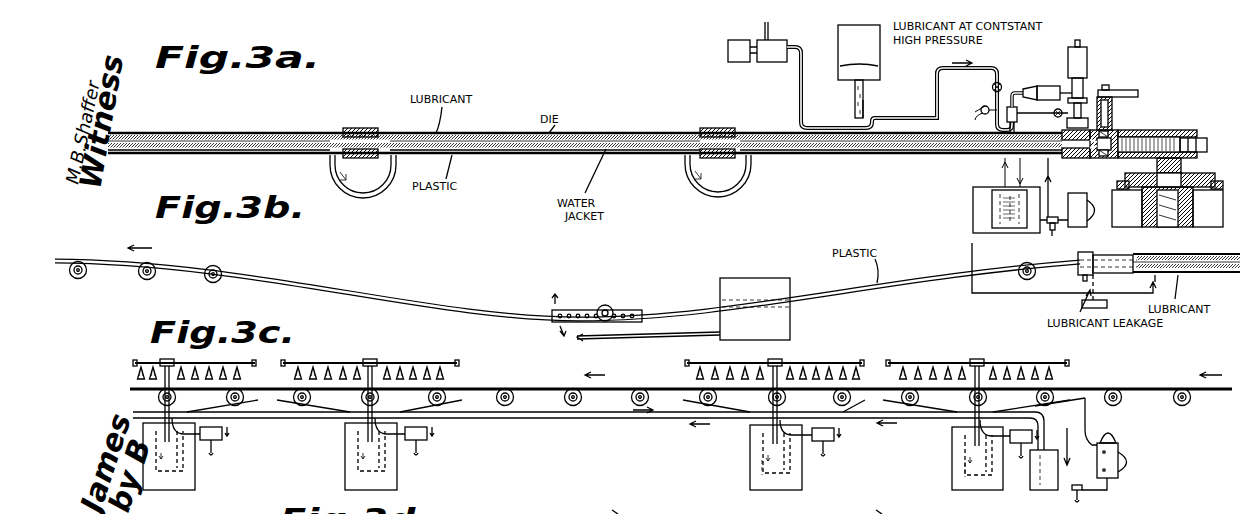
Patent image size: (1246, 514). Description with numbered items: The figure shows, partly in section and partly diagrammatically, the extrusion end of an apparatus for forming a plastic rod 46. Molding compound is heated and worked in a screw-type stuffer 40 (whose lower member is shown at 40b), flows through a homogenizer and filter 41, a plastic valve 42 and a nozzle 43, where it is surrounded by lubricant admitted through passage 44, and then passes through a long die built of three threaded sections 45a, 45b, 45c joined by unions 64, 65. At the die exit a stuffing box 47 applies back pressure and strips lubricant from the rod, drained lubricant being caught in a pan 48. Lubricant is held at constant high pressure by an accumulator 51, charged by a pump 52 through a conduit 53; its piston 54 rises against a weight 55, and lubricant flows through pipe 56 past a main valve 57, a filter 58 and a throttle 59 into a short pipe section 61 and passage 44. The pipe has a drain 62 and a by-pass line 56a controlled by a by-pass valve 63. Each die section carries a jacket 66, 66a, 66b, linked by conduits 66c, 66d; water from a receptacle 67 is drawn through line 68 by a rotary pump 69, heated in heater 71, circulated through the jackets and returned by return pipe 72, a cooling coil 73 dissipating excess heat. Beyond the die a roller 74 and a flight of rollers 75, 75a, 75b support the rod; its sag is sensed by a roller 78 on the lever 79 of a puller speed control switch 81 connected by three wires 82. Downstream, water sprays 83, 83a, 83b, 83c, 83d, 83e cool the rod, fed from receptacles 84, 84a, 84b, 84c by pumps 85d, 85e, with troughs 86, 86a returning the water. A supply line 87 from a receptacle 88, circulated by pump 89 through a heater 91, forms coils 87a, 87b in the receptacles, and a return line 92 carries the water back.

In FIG. 3A, the stuffer 40 is at (1120, 207).
In FIG. 3A, the die holder lower member 40b is at (1170, 221).
In FIG. 3A, the homogenizer and filter 41 is at (1148, 138).
In FIG. 3A, the plastic valve 42 is at (1107, 132).
In FIG. 3A, the nozzle 43 is at (1078, 158).
In FIG. 3A, the passage 44 is at (1112, 127).
In FIG. 3A, the die section 45a is at (790, 156).
In FIG. 3A, the die section 45b is at (522, 156).
In FIG. 3A, the die section 45c is at (145, 155).
In FIG. 3B, the die section 45c is at (1193, 275).
In FIG. 3A, the rod 46 is at (607, 133).
In FIG. 3B, the rod 46 is at (392, 290).
In FIG. 3C, the rod 46 is at (488, 387).
In FIG. 3B, the stuffing box 47 is at (1078, 273).
In FIG. 3B, the pan 48 is at (1108, 304).
In FIG. 3A, the accumulator 51 is at (865, 104).
In FIG. 3A, the pump 52 is at (728, 56).
In FIG. 3A, the conduit 53 is at (797, 78).
In FIG. 3A, the piston 54 is at (855, 100).
In FIG. 3A, the weight 55 is at (852, 41).
In FIG. 3A, the pipe 56 is at (918, 108).
In FIG. 3A, the by-pass line 56a is at (993, 155).
In FIG. 3A, the main valve 57 is at (992, 87).
In FIG. 3A, the filter 58 is at (1047, 88).
In FIG. 3A, the throttle 59 is at (1077, 78).
In FIG. 3A, the short pipe section 61 is at (1082, 112).
In FIG. 3A, the drain 62 is at (980, 108).
In FIG. 3A, the by-pass valve 63 is at (1018, 152).
In FIG. 3A, the union 64 is at (713, 128).
In FIG. 3A, the union 65 is at (362, 128).
In FIG. 3A, the jacket 66 is at (870, 156).
In FIG. 3A, the jacket 66a is at (636, 156).
In FIG. 3A, the jacket 66b is at (246, 156).
In FIG. 3A, the conduit 66c is at (701, 197).
In FIG. 3A, the conduit 66d is at (350, 199).
In FIG. 3A, the receptacle 67 is at (992, 198).
In FIG. 3A, the line 68 is at (1049, 224).
In FIG. 3A, the rotary pump 69 is at (1056, 228).
In FIG. 3A, the heater 71 is at (1067, 192).
In FIG. 3A, the return pipe 72 is at (975, 203).
In FIG. 3B, the return pipe 72 is at (988, 294).
In FIG. 3A, the water cooling coil 73 is at (990, 215).
In FIG. 3B, the roller 74 is at (1025, 281).
In FIG. 3B, the roller 75 is at (225, 282).
In FIG. 3C, the roller 75 is at (573, 405).
In FIG. 3B, the roller 75a is at (152, 280).
In FIG. 3B, the roller 75b is at (88, 278).
In FIG. 3B, the roller 78 is at (608, 306).
In FIG. 3B, the lever 79 is at (667, 310).
In FIG. 3B, the puller speed control switch 81 is at (768, 280).
In FIG. 3B, the wires 82 is at (698, 336).
In FIG. 3C, the water spray 83 is at (943, 361).
In FIG. 3C, the water spray 83a is at (806, 361).
In FIG. 3C, the water spray 83b is at (360, 361).
In FIG. 3C, the water spray 83c is at (160, 362).
In FIG. 3C, the water spray 83d is at (876, 512).
In FIG. 3C, the water spray 83e is at (625, 503).
In FIG. 3C, the receptacle 84 is at (975, 490).
In FIG. 3C, the receptacle 84a is at (800, 480).
In FIG. 3C, the receptacle 84b is at (398, 485).
In FIG. 3C, the receptacle 84c is at (185, 485).
In FIG. 3C, the pump 85d is at (832, 446).
In FIG. 3C, the pump 85e is at (422, 440).
In FIG. 3C, the trough 86 is at (703, 418).
In FIG. 3C, the trough 86a is at (1062, 405).
In FIG. 3C, the supply line 87 is at (1087, 415).
In FIG. 3C, the coil 87a is at (980, 470).
In FIG. 3C, the coil 87b is at (765, 463).
In FIG. 3C, the receptacle 88 is at (1045, 490).
In FIG. 3C, the pump 89 is at (1085, 492).
In FIG. 3C, the heater 91 is at (1125, 448).
In FIG. 3C, the return line 92 is at (530, 420).